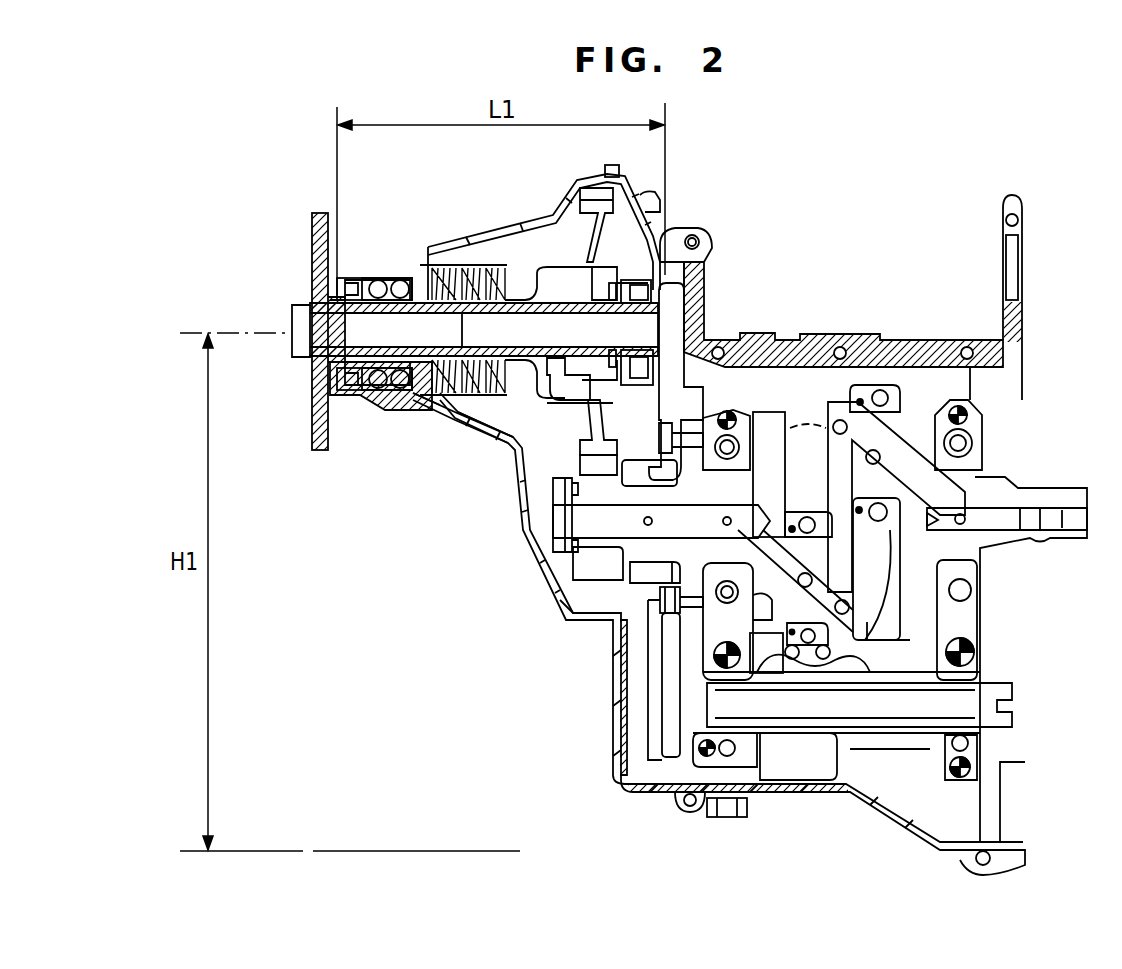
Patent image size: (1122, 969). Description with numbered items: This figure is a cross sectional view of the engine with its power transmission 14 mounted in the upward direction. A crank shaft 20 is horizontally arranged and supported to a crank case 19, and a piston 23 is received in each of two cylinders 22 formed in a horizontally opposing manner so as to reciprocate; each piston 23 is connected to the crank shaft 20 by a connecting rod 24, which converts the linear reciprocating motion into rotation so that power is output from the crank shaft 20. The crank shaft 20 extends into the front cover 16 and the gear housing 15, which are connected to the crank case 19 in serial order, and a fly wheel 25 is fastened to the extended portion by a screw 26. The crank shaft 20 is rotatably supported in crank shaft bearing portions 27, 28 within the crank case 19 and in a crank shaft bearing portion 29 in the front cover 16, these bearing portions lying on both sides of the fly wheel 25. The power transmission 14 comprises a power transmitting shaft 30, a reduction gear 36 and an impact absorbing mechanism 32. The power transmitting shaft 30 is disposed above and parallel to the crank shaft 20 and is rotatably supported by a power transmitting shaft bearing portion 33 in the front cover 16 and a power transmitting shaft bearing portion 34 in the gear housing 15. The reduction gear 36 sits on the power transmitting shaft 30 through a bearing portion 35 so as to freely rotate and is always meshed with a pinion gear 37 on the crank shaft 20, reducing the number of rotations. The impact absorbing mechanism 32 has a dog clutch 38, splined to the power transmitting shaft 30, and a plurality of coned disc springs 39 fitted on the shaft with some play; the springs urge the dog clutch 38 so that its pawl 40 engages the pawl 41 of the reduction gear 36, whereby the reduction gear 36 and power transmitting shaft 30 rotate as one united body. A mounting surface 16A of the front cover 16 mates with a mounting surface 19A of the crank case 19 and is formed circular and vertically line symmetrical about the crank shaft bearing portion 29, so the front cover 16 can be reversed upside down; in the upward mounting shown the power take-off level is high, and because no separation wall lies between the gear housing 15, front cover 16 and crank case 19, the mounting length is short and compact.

The power transmission 14 is at (482, 490).
The gear housing 15 is at (477, 231).
The front cover 16 is at (638, 708).
The mounting surface 16A is at (670, 800).
The crank case 19 is at (797, 788).
The mounting surface 19A is at (672, 765).
The crank shaft 20 is at (993, 537).
The cylinder 22 is at (882, 530).
The piston 23 is at (807, 417).
The connecting rod 24 is at (812, 515).
The fly wheel 25 is at (668, 657).
The screw 26 is at (626, 614).
The crank shaft bearing portion 27 is at (970, 452).
The crank shaft bearing portion 28 is at (717, 475).
The crank shaft bearing portion 29 is at (657, 486).
The power transmitting shaft 30 is at (340, 327).
The impact absorbing mechanism 32 is at (408, 420).
The power transmitting shaft bearing portion 33 is at (650, 248).
The power transmitting shaft bearing portion 34 is at (398, 268).
The bearing portion 35 is at (620, 348).
The reduction gear 36 is at (595, 200).
The pinion gear 37 is at (573, 616).
The dog clutch 38 is at (537, 390).
The coned disc spring 39 is at (462, 400).
The pawl 40 is at (567, 280).
The pawl 41 is at (556, 370).